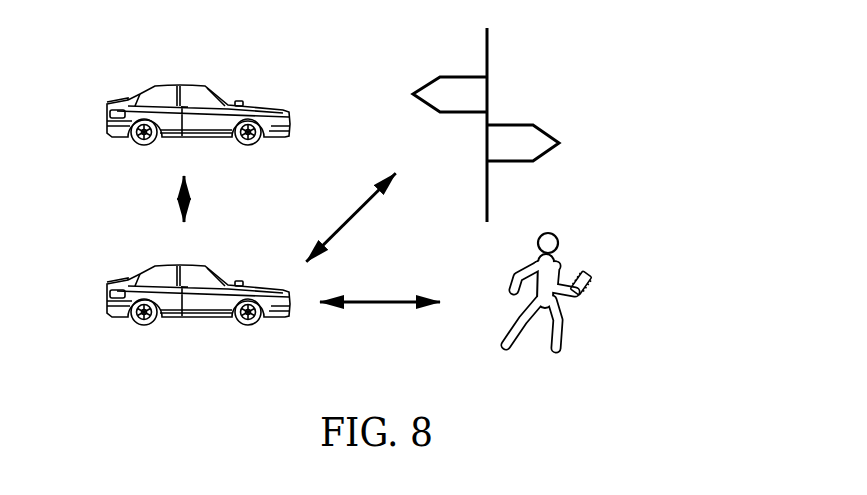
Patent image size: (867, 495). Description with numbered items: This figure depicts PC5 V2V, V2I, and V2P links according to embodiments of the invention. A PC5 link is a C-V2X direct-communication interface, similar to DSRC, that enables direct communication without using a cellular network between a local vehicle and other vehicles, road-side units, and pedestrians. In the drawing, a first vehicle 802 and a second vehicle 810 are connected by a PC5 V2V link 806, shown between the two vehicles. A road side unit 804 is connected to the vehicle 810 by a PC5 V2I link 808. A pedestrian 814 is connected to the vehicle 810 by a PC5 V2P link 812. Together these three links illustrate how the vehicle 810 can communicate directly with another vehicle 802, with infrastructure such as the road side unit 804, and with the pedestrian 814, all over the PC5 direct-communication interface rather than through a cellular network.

The vehicle 802 is at (107, 106).
The road side unit 804 is at (489, 40).
The PC5 V2V link 806 is at (186, 197).
The PC5 V2I link 808 is at (373, 197).
The vehicle 810 is at (107, 286).
The PC5 V2P link 812 is at (380, 304).
The pedestrian 814 is at (557, 235).